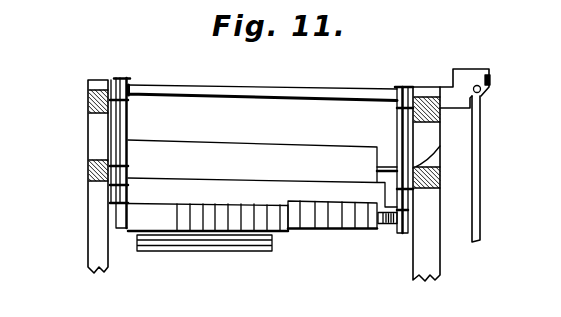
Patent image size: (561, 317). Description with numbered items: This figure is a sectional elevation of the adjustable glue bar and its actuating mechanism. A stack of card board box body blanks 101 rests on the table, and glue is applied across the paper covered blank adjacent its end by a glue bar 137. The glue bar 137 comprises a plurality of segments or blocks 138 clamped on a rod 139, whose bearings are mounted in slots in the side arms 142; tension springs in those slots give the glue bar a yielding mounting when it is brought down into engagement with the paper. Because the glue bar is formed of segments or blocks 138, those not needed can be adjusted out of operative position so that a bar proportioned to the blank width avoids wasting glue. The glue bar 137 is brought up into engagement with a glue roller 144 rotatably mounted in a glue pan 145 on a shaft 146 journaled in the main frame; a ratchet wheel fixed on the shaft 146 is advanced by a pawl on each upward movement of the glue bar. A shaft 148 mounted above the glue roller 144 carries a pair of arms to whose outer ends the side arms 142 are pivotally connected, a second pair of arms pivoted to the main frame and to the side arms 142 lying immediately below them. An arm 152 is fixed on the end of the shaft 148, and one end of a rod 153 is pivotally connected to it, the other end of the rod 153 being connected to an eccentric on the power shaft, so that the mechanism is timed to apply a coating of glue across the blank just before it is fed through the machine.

The stack of card board box body blanks 101 is at (189, 247).
The glue bar 137 is at (258, 229).
The segments or blocks 138 is at (324, 221).
The rod 139 is at (389, 226).
The side arms 142 is at (118, 131).
The glue roller 144 is at (192, 149).
The glue pan 145 is at (263, 186).
The shaft 146 is at (409, 172).
The shaft 148 is at (186, 92).
The arm 152 is at (463, 69).
The rod 153 is at (477, 173).